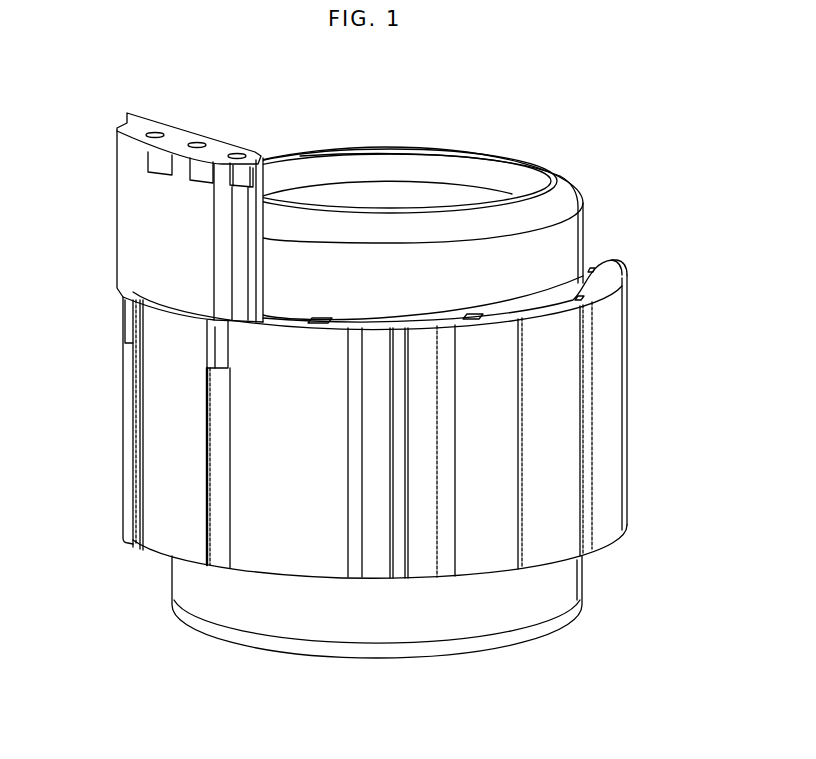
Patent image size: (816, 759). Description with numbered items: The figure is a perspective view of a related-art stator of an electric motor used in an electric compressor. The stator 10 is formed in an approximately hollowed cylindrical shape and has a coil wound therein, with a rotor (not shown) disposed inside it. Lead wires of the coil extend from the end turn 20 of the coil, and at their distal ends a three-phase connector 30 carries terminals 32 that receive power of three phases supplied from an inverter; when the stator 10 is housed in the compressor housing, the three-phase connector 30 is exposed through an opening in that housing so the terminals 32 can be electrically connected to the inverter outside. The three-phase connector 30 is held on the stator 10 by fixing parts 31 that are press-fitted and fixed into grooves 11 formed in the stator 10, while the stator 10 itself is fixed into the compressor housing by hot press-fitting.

The stator 10 is at (606, 428).
The grooves 11 is at (136, 444).
The end turn 20 is at (560, 252).
The 3-phase connector 30 is at (142, 230).
The fixing parts 31 is at (212, 337).
The terminals 32 is at (238, 153).